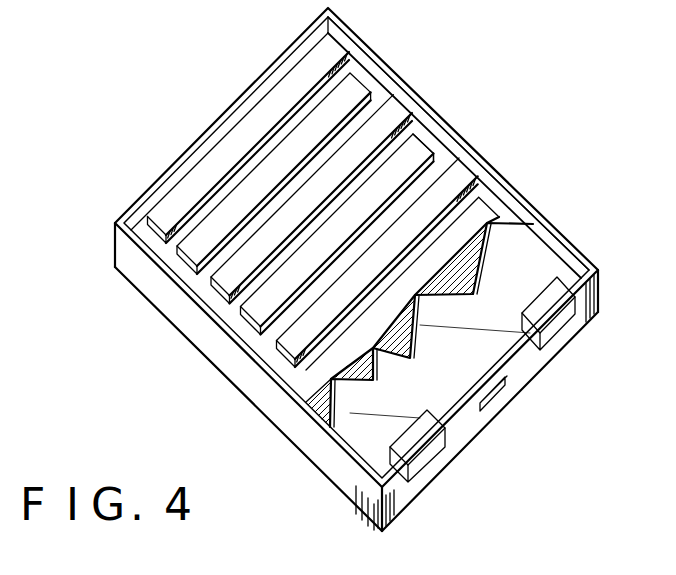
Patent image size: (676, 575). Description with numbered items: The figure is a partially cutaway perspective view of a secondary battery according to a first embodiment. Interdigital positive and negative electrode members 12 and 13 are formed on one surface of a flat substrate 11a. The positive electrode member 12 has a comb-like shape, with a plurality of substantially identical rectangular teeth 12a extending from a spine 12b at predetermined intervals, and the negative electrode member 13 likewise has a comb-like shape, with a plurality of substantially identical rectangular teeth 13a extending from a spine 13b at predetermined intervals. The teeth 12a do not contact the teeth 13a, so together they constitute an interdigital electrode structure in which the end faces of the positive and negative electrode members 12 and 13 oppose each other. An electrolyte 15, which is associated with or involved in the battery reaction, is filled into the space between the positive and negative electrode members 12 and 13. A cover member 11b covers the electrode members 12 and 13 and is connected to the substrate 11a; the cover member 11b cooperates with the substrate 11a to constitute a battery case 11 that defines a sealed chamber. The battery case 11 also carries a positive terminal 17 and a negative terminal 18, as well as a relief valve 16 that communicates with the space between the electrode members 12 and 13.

The battery case 11 is at (200, 362).
The flat substrate 11a is at (300, 408).
The cover member 11b is at (353, 445).
The positive electrode member 12 is at (395, 108).
The rectangular teeth 12a is at (160, 224).
The spine 12b is at (368, 50).
The negative electrode member 13 is at (193, 257).
The rectangular teeth 13a is at (353, 95).
The spine 13b is at (200, 325).
The electrolyte 15 is at (447, 163).
The relief valve 16 is at (500, 390).
The positive terminal 17 is at (563, 318).
The negative terminal 18 is at (430, 455).